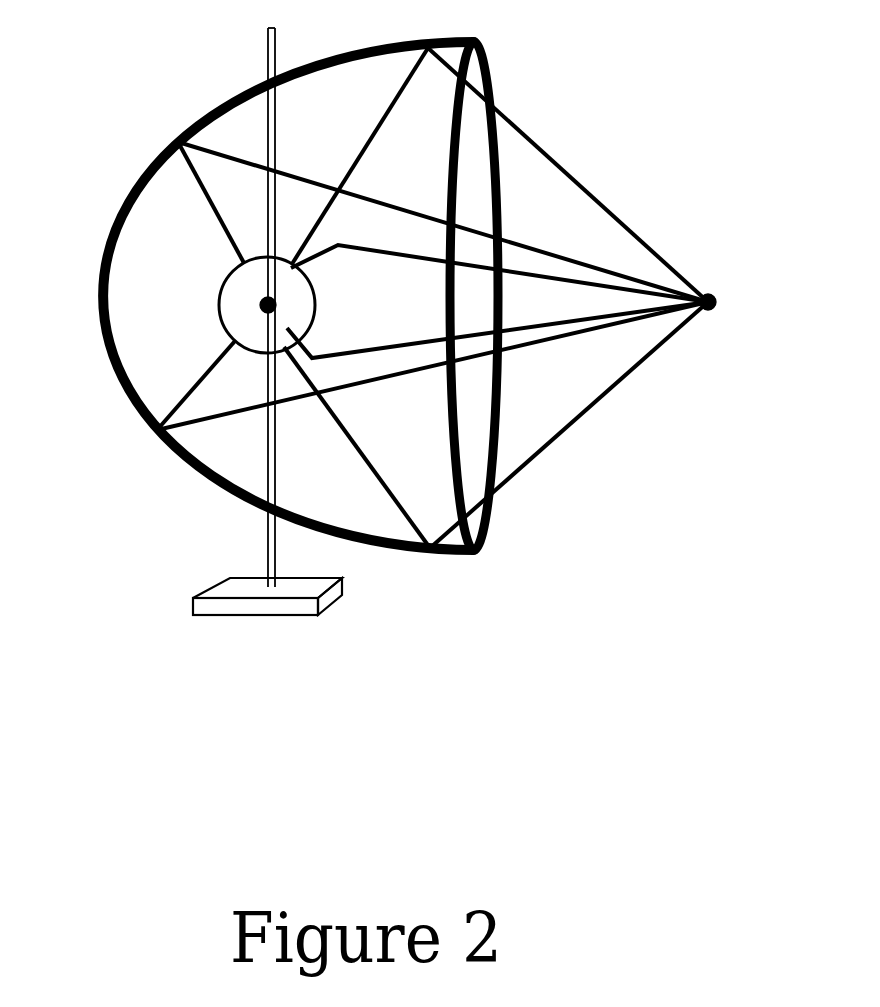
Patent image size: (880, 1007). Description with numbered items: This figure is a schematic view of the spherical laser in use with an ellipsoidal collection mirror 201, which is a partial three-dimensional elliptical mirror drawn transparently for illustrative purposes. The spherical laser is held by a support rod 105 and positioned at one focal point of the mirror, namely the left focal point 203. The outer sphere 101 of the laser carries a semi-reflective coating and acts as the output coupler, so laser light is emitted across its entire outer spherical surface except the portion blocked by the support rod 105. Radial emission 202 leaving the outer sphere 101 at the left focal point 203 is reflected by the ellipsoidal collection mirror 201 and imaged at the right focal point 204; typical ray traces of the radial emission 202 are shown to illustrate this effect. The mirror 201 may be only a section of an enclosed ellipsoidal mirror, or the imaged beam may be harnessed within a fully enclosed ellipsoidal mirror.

The outer sphere 101 is at (220, 287).
The support rod 105 is at (270, 550).
The ellipsoidal collection mirror 201 is at (197, 117).
The radial emission 202 is at (575, 185).
The left focal point 203 is at (262, 306).
The right focal point 204 is at (758, 295).